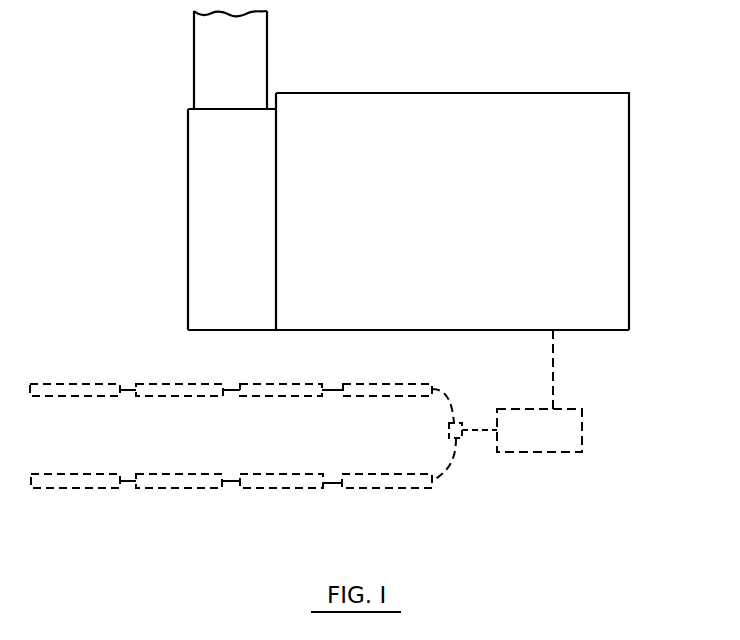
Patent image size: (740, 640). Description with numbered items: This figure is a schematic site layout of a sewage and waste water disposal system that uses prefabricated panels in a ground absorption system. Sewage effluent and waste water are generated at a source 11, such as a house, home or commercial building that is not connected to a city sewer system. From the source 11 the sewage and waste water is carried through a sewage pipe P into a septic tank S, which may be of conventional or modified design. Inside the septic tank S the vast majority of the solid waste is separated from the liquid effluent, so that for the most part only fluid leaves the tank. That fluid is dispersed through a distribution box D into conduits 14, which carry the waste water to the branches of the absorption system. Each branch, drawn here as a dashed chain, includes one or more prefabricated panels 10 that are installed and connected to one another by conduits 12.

The panels 10 is at (197, 483).
The source 11 is at (629, 211).
The conduits 12 is at (333, 488).
The conduits 14 is at (449, 473).
The distribution box D is at (457, 440).
The septic tank S is at (547, 452).
The sewage pipe P is at (553, 392).